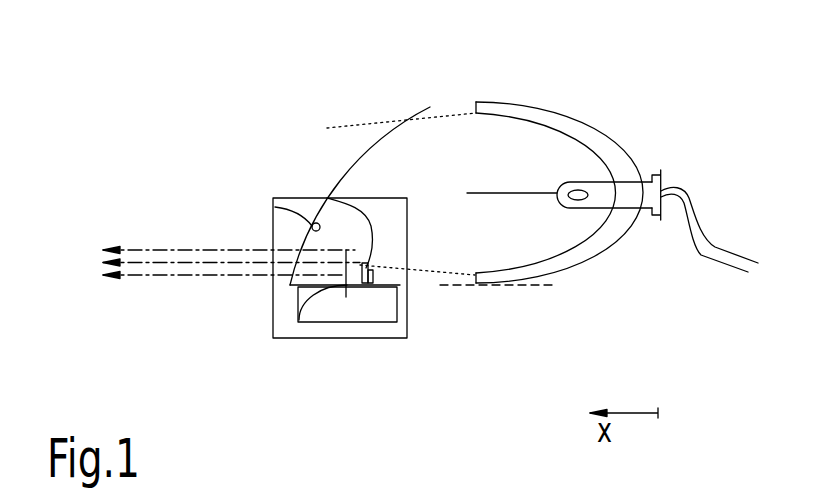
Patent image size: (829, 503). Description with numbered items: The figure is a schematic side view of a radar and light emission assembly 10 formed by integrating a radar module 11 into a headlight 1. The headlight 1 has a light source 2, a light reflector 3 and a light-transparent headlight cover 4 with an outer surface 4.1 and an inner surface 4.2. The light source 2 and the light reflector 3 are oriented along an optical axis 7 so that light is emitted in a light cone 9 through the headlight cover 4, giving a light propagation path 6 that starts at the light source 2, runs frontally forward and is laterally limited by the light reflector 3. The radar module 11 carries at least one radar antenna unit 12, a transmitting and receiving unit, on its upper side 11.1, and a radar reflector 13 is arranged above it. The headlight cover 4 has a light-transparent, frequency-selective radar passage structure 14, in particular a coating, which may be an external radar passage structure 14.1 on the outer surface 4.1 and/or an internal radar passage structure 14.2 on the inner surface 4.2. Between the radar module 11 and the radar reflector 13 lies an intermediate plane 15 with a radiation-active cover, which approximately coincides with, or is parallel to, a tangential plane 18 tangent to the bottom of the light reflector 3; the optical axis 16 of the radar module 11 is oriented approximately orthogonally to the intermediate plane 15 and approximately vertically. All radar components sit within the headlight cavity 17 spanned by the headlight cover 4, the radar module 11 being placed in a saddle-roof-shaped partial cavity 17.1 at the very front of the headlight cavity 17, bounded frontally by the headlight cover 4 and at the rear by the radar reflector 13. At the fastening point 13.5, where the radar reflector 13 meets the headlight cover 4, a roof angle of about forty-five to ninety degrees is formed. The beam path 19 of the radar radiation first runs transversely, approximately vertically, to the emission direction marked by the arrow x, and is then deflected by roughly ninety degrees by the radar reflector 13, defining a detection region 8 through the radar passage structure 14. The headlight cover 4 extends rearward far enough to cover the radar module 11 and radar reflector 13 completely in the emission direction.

The headlight 1 is at (698, 155).
The light source 2 is at (593, 182).
The light reflector 3 is at (553, 287).
The headlight cover 4 is at (347, 175).
The outer surface 4.1 is at (413, 119).
The inner surface 4.2 is at (413, 119).
The light propagation path 6 is at (460, 112).
The optical axis 7 is at (518, 193).
The detection region 8 is at (92, 280).
The light cone 9 is at (455, 283).
The radar and light emission assembly 10 is at (650, 118).
The radar module 11 is at (340, 305).
The upper side 11.1 is at (397, 272).
The radar antenna unit 12 is at (298, 197).
The radar reflector 13 is at (298, 197).
The fastening point 13.5 is at (327, 198).
The radar passage structure 14 is at (290, 255).
The external radar passage structure 14.1 is at (325, 198).
The internal radar passage structure 14.2 is at (266, 208).
The intermediate plane 15 is at (290, 284).
The optical axis of the radar module 16 is at (299, 320).
The headlight cavity 17 is at (522, 243).
The partial cavity 17.1 is at (348, 238).
The tangential plane 18 is at (528, 285).
The beam path 19 is at (229, 233).